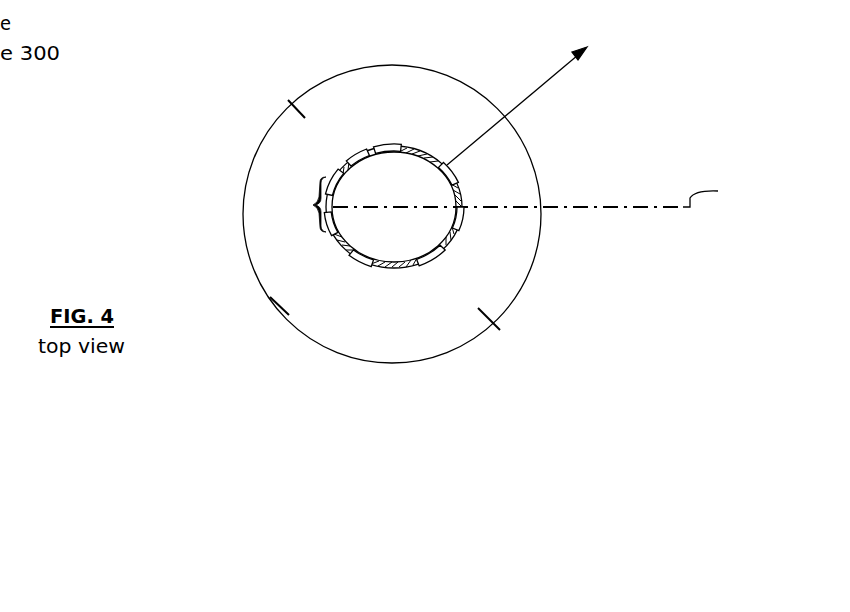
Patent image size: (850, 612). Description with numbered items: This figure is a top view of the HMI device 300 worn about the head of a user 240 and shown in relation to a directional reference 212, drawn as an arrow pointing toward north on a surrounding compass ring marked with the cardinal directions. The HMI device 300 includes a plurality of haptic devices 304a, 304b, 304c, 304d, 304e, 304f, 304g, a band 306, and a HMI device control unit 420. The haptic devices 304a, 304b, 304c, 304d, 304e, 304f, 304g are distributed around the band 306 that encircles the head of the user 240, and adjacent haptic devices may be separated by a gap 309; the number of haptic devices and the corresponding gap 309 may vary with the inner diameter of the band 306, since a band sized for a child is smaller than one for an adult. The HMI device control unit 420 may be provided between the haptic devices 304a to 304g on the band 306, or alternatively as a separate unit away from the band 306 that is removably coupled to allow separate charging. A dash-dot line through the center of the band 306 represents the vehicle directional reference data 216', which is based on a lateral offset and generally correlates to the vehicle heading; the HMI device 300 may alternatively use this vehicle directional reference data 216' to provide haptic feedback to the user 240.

The HMI device 300 is at (316, 200).
The directional reference 212 is at (545, 82).
The vehicle directional reference data 216' is at (575, 190).
The band 306 is at (410, 150).
The user 240 is at (408, 238).
The gap 309 is at (279, 204).
The haptic device 304a is at (513, 274).
The haptic device 304b is at (421, 262).
The haptic device 304c is at (360, 265).
The haptic device 304d is at (328, 224).
The haptic device 304e is at (339, 168).
The haptic device 304f is at (412, 120).
The haptic device 304g is at (518, 204).
The HMI device control unit 420 is at (363, 147).